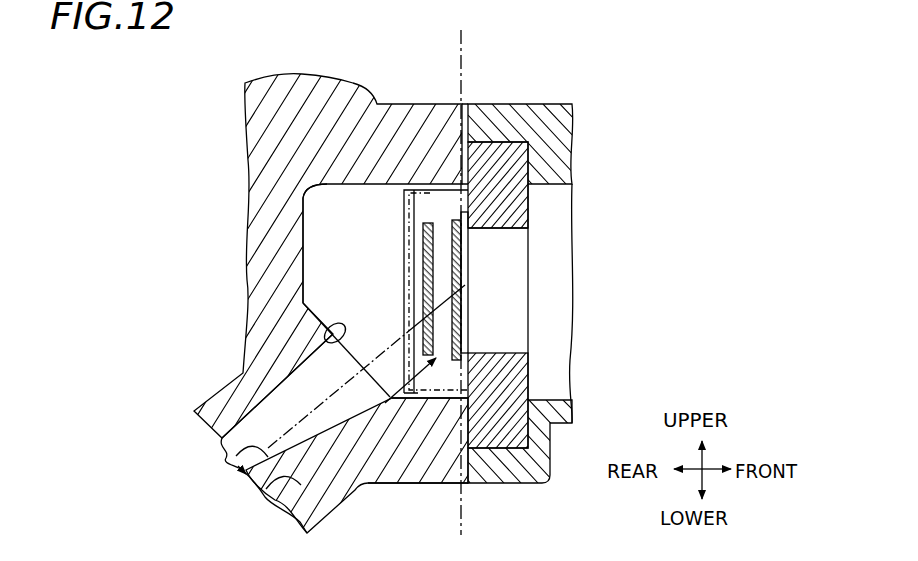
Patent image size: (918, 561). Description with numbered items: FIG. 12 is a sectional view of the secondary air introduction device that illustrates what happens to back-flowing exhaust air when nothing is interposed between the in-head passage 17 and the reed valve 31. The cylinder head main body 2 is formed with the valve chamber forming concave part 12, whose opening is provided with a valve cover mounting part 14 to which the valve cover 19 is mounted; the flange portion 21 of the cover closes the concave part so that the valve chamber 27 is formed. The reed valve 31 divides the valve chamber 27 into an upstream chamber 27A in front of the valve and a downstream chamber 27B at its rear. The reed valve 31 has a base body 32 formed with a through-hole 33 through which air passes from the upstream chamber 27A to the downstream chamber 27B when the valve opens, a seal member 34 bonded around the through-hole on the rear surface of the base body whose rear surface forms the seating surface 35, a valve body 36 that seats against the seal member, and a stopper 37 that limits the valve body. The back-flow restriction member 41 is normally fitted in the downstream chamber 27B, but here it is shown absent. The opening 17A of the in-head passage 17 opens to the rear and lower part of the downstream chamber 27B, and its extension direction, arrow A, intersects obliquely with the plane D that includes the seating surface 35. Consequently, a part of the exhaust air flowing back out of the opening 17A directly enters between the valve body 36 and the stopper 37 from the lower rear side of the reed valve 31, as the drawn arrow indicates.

The cylinder head main body 2 is at (258, 100).
The valve chamber forming concave part 12 is at (307, 193).
The valve chamber 27 is at (322, 237).
The upstream chamber 27A is at (548, 355).
The downstream chamber 27B is at (328, 299).
The back-flow restriction member 41 is at (404, 279).
The in-head passage 17 is at (266, 495).
The opening 17A is at (325, 337).
The valve cover mounting part 14 is at (420, 450).
The seating surface 35 is at (458, 363).
The seal member 34 is at (466, 259).
The valve body 36 is at (445, 228).
The stopper 37 is at (402, 210).
The base body 32 is at (488, 138).
The reed valve 31 is at (518, 126).
The through-hole 33 is at (498, 229).
The valve cover 19 is at (575, 103).
The flange portion 21 is at (507, 484).
The arrow A is at (226, 457).
The plane D is at (461, 47).